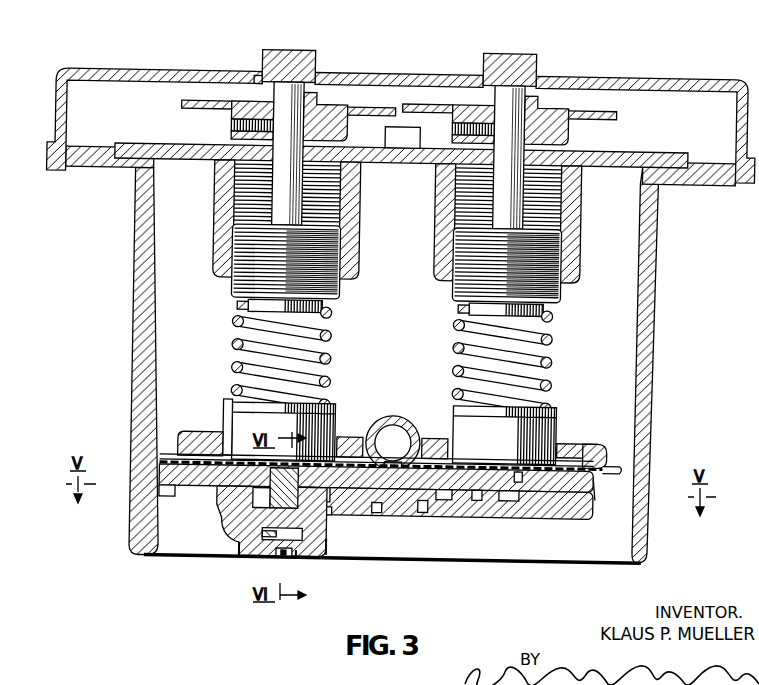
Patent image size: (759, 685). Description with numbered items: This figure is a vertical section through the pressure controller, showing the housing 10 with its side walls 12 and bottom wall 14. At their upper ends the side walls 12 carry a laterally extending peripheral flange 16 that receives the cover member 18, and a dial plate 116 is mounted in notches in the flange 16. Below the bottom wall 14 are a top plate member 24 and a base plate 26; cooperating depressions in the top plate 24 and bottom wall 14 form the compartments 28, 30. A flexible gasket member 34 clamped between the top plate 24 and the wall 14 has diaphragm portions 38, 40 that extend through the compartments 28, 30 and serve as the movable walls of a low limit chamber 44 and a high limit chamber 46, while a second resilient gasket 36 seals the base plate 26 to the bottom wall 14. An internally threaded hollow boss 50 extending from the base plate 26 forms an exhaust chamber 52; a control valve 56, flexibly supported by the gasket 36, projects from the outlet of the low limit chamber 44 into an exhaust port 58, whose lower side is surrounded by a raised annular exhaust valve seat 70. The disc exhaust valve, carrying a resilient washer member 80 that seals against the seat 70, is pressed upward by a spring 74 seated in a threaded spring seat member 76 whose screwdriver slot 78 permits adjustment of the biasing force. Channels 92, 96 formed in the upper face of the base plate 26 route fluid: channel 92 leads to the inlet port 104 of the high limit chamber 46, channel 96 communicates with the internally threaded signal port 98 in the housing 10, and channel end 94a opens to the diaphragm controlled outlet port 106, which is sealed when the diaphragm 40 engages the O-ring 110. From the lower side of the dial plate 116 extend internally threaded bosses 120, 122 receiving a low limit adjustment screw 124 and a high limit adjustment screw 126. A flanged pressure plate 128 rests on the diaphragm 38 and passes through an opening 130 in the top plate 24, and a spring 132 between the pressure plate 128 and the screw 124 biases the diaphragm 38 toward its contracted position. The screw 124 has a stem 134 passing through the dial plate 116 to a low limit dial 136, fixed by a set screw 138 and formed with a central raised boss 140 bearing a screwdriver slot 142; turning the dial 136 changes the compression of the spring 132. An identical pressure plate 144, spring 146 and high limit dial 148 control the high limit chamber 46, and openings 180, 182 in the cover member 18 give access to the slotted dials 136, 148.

The housing 10 is at (398, 307).
The side walls 12 is at (138, 300).
The bottom wall 14 is at (142, 497).
The peripheral flange 16 is at (107, 170).
The cover member 18 is at (630, 80).
The top plate member 24 is at (572, 441).
The base plate 26 is at (567, 518).
The compartment 28 is at (200, 453).
The compartment 30 is at (447, 441).
The flexible gasket member 34 is at (622, 470).
The second resilient gasket 36 is at (180, 487).
The diaphragm portion 38 is at (362, 441).
The diaphragm portion 40 is at (585, 457).
The low limit chamber 44 is at (217, 472).
The high limit chamber 46 is at (593, 497).
The internally threaded hollow boss 50 is at (327, 530).
The exhaust chamber 52 is at (322, 542).
The control valve 56 is at (273, 468).
The exhaust port 58 is at (246, 505).
The exhaust valve seat 70 is at (247, 530).
The spring 74 is at (257, 560).
The spring seat member 76 is at (295, 563).
The screwdriver slot 78 is at (278, 557).
The washer member 80 is at (327, 512).
The channel 92 is at (423, 505).
The channel end 94a is at (477, 500).
The channel 96 is at (377, 507).
The signal port 98 is at (402, 418).
The inlet port 104 is at (440, 500).
The diaphragm controlled outlet port 106 is at (500, 500).
The O-ring 110 is at (518, 500).
The dial plate 116 is at (640, 153).
The internally threaded boss 120 is at (362, 210).
The internally threaded boss 122 is at (441, 251).
The low limit adjustment screw 124 is at (340, 297).
The high limit adjustment screw 126 is at (560, 303).
The flanged pressure plate 128 is at (237, 407).
The opening 130 is at (223, 420).
The spring 132 is at (333, 357).
The stem 134 is at (282, 102).
The low limit dial 136 is at (338, 108).
The set screw 138 is at (227, 127).
The central raised boss 140 is at (290, 55).
The screwdriver slot 142 is at (283, 52).
The pressure plate 144 is at (557, 422).
The spring 146 is at (553, 363).
The high limit dial 148 is at (600, 113).
The opening 180 is at (258, 73).
The opening 182 is at (540, 85).